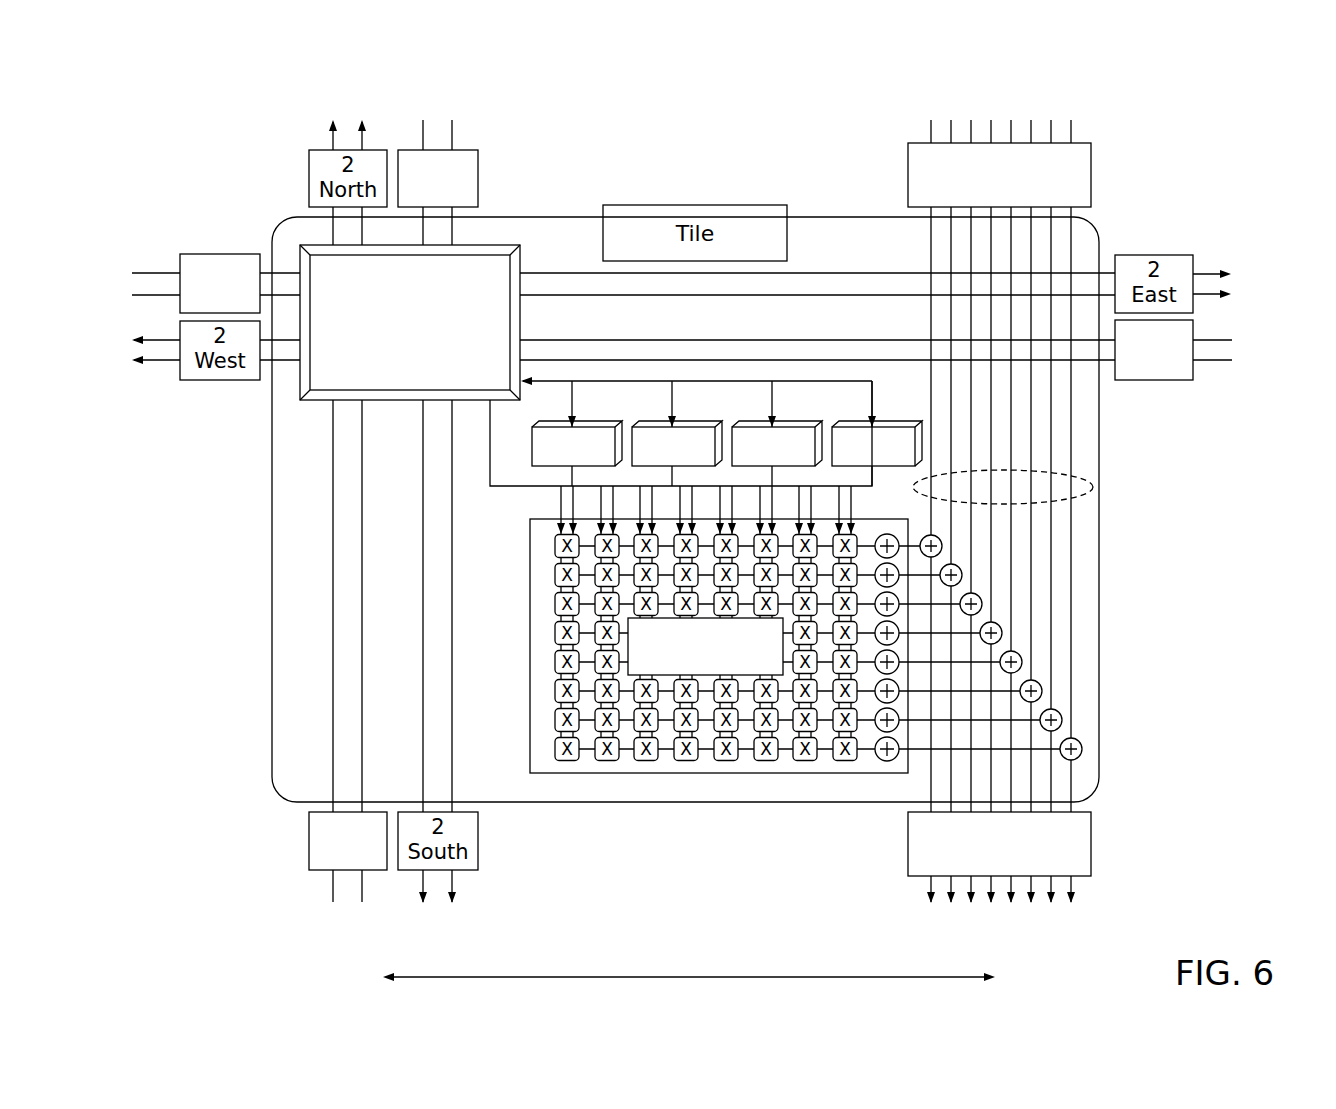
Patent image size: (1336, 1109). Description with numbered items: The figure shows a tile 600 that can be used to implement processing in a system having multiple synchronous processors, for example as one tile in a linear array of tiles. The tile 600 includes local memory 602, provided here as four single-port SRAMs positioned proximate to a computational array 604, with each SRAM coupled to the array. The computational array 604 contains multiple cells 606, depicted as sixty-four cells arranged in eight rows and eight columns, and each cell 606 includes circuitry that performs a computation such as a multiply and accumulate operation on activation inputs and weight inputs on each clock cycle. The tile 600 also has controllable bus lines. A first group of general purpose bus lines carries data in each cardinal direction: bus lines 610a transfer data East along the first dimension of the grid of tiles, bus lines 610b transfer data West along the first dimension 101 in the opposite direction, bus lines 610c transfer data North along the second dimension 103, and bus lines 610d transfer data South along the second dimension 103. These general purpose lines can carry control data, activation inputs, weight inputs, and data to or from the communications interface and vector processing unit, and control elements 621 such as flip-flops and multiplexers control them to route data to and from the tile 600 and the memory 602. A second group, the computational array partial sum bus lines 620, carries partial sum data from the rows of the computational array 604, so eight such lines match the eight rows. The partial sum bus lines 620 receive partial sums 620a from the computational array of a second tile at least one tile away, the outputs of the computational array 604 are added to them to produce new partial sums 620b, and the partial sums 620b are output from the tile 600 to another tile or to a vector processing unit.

The tile 600 is at (152, 104).
The second dimension 103 is at (90, 537).
The first dimension 101 is at (692, 976).
The control elements 621 is at (340, 360).
The local memory 602 is at (560, 426).
The computational array 604 is at (664, 762).
The cells 606 is at (567, 762).
The bus lines 610a is at (122, 262).
The bus lines 610b is at (1237, 320).
The bus lines 610c is at (309, 906).
The bus lines 610d is at (398, 100).
The computational array partial sum bus lines 620 is at (1078, 477).
The partial sums 620a is at (1094, 178).
The new partial sums 620b is at (1094, 838).